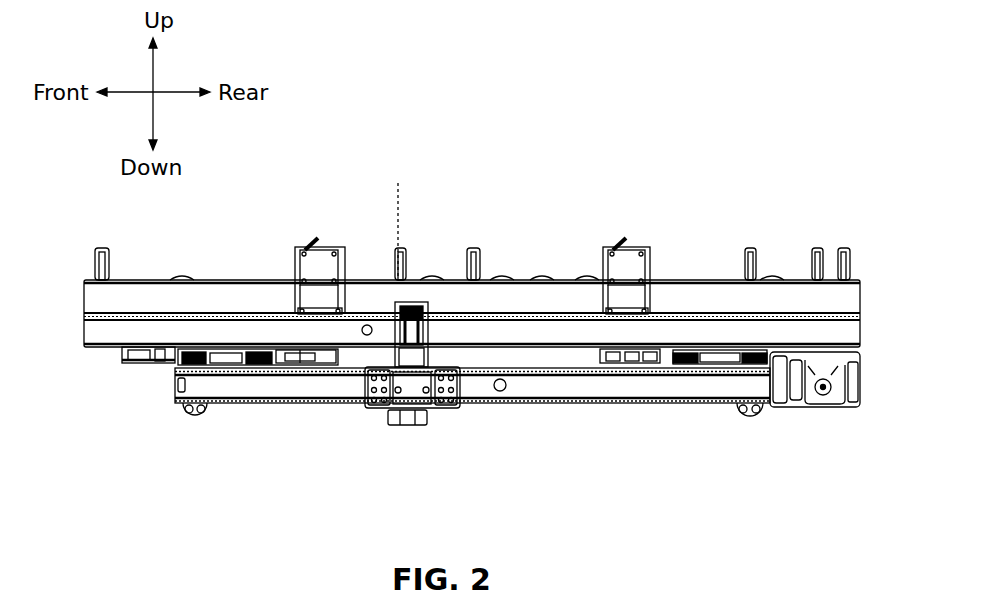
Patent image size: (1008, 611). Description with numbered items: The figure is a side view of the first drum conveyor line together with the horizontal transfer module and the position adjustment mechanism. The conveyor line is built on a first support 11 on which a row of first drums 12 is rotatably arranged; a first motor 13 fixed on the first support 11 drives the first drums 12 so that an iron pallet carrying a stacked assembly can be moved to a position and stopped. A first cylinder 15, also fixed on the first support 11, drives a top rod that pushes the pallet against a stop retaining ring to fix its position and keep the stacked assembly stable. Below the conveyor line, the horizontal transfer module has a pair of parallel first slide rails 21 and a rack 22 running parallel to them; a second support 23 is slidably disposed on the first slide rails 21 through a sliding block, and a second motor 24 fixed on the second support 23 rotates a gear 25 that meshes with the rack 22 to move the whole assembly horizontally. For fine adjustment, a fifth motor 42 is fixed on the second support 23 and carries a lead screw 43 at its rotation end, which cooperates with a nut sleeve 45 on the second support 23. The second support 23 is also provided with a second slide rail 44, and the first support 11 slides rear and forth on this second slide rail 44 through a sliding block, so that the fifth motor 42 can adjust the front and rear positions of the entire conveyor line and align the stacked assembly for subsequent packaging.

The first support 11 is at (225, 327).
The first drums 12 is at (540, 280).
The first motor 13 is at (845, 400).
The first cylinder 15 is at (627, 265).
The first slide rails 21 is at (750, 418).
The rack 22 is at (388, 425).
The second support 23 is at (583, 388).
The second motor 24 is at (413, 307).
The gear 25 is at (420, 425).
The fifth motor 42 is at (130, 365).
The lead screw 43 is at (290, 355).
The second slide rail 44 is at (685, 372).
The nut sleeve 45 is at (253, 373).